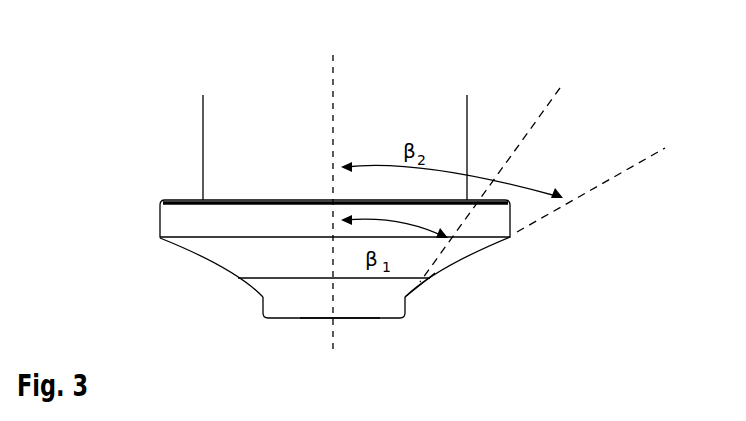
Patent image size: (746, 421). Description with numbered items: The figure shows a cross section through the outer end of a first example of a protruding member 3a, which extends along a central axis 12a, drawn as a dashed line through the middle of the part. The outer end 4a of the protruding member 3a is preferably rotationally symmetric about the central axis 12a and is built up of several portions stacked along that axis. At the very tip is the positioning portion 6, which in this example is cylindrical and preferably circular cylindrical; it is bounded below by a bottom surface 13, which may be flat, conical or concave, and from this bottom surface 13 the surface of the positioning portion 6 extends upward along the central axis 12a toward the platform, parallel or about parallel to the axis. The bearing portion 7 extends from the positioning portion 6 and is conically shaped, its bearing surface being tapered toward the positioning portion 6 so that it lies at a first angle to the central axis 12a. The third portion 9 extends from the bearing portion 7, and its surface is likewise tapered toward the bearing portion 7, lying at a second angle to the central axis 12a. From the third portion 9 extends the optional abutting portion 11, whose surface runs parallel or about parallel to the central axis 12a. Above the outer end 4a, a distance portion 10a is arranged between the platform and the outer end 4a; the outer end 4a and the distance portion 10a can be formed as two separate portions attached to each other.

The protruding member 3a is at (195, 130).
The distance portion 10a is at (467, 108).
The central axis 12a is at (333, 103).
The abutting portion 11 is at (160, 222).
The outer end 4a is at (195, 271).
The positioning portion 6 is at (262, 300).
The bottom surface 13 is at (380, 320).
The bearing portion 7 is at (413, 285).
The third portion 9 is at (472, 255).